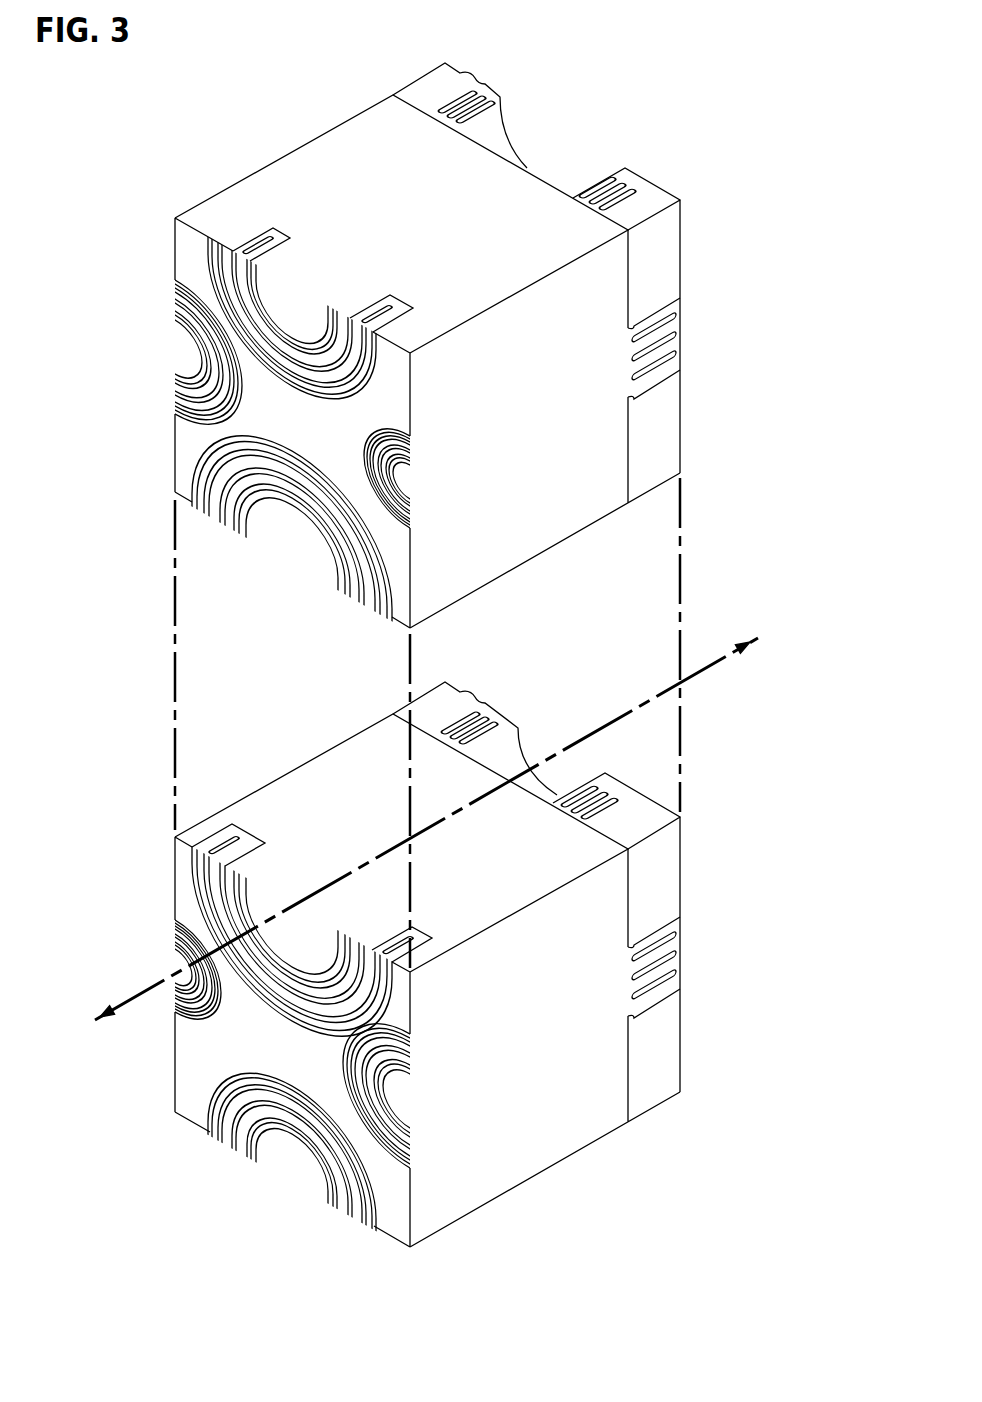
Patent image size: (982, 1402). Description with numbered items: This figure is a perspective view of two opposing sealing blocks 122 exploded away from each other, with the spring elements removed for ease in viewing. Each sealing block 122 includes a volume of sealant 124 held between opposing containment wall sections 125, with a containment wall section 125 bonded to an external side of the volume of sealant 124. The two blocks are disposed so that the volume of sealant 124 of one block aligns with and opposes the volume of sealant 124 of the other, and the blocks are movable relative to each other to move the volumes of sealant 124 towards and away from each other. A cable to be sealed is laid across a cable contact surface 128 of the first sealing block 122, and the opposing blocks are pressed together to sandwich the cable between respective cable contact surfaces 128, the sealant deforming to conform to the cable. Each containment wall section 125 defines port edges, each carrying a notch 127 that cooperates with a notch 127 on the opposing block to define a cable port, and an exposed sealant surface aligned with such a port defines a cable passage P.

The sealing block 122 is at (687, 222).
The volume of sealant 124 is at (335, 180).
The containment wall section 125 is at (442, 75).
The notch 127 is at (290, 290).
The cable contact surface 128 is at (513, 893).
The cable passage P is at (710, 663).